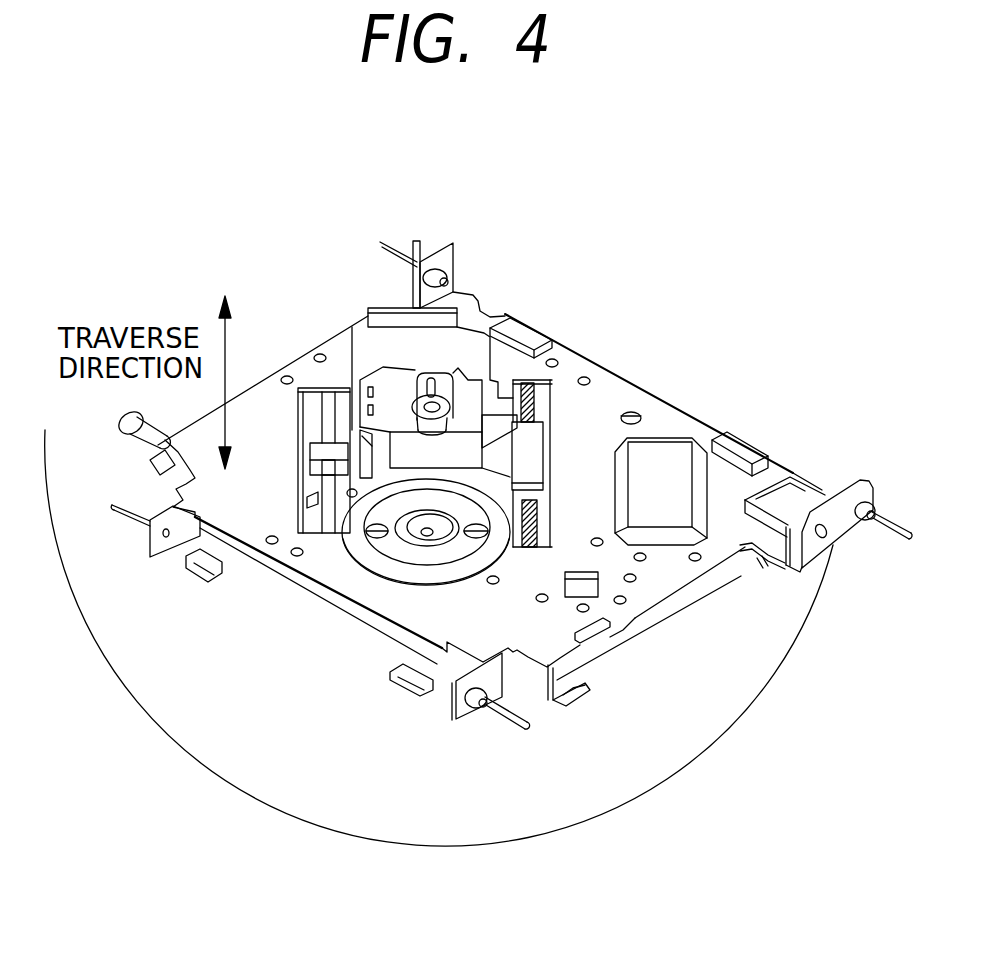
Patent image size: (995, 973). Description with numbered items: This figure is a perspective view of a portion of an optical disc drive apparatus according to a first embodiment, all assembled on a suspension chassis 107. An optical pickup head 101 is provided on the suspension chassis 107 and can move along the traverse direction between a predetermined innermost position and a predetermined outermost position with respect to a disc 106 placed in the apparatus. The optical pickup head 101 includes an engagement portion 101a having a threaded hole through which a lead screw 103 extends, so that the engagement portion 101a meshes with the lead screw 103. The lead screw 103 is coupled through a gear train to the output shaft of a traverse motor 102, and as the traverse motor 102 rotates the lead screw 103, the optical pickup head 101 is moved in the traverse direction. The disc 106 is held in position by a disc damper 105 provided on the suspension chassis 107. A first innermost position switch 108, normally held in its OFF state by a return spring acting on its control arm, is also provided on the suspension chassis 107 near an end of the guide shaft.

The optical pickup head 101 is at (383, 363).
The engagement portion 101a is at (538, 440).
The traverse motor 102 is at (683, 457).
The lead screw 103 is at (537, 517).
The disc damper 105 is at (467, 573).
The disc 106 is at (558, 832).
The suspension chassis 107 is at (393, 612).
The first innermost position switch 108 is at (300, 530).